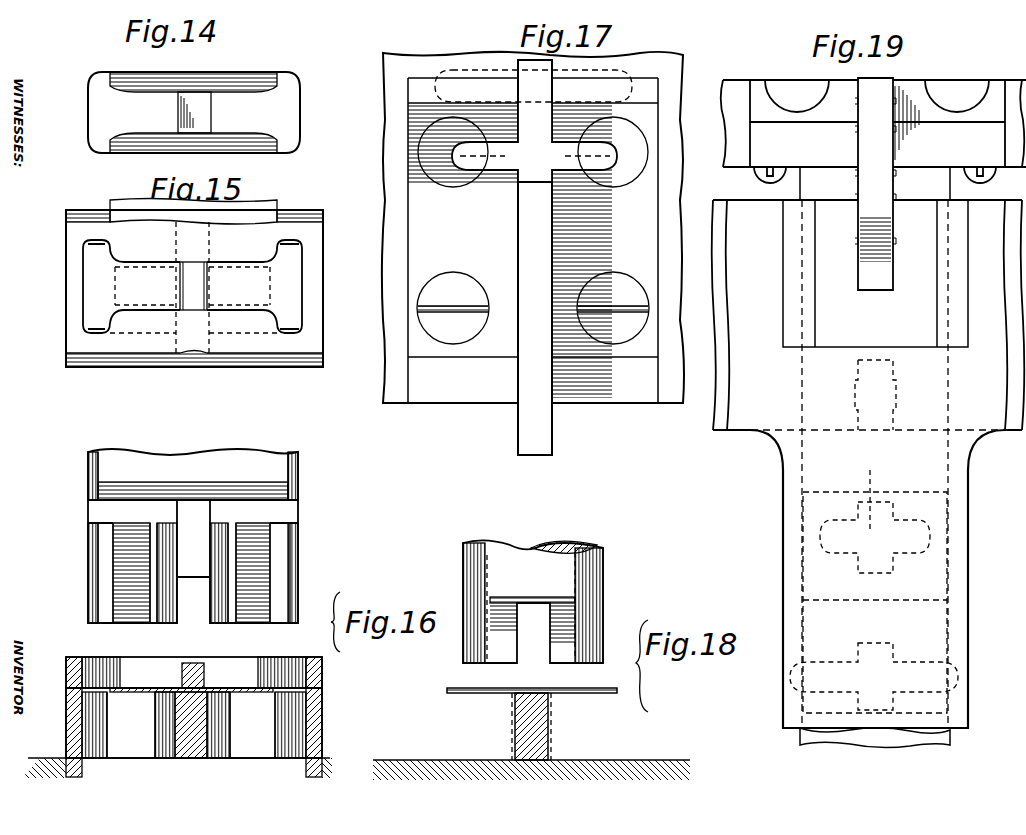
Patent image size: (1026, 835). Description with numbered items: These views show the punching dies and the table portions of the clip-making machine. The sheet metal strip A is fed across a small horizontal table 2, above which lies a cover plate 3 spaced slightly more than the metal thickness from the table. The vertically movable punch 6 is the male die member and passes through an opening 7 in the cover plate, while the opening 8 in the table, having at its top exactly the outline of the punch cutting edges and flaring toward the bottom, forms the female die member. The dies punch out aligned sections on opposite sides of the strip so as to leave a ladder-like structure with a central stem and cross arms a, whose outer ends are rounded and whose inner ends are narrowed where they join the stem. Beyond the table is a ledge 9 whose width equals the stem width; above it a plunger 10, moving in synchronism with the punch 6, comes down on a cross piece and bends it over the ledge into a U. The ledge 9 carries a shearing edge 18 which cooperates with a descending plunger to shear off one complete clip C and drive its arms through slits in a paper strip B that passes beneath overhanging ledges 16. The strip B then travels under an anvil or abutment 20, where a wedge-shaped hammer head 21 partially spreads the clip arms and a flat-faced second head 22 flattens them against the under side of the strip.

In FIG. 15, the table 2 is at (90, 368).
In FIG. 16, the table 2 is at (66, 700).
In FIG. 15, the cover plate 3 is at (72, 326).
In FIG. 16, the cover plate 3 is at (66, 662).
In FIG. 14, the punch 6 is at (203, 70).
In FIG. 16, the punch 6 is at (90, 508).
In FIG. 15, the opening 7 is at (245, 262).
In FIG. 16, the opening 7 is at (288, 672).
In FIG. 16, the opening 8 is at (107, 705).
In FIG. 17, the ledge 9 is at (533, 253).
In FIG. 18, the ledge 9 is at (550, 718).
In FIG. 18, the plunger 10 is at (462, 548).
In FIG. 15, the overhanging ledges 16 is at (50, 278).
In FIG. 17, the shearing edge 18 is at (700, 198).
In FIG. 19, the anvil or abutment 20 is at (1000, 260).
In FIG. 19, the head member 21 is at (752, 525).
In FIG. 19, the second head 22 is at (762, 663).
In FIG. 15, the sheet metal strip A is at (210, 201).
In FIG. 16, the sheet metal strip A is at (245, 690).
In FIG. 17, the sheet metal strip A is at (527, 65).
In FIG. 18, the sheet metal strip A is at (529, 688).
In FIG. 19, the sheet metal strip A is at (875, 184).
In FIG. 19, the paper strip B is at (808, 185).
In FIG. 19, the clip C is at (878, 275).
In FIG. 17, the cross arms a is at (533, 230).
In FIG. 18, the cross arms a is at (512, 730).
In FIG. 19, the cross arms a is at (858, 131).